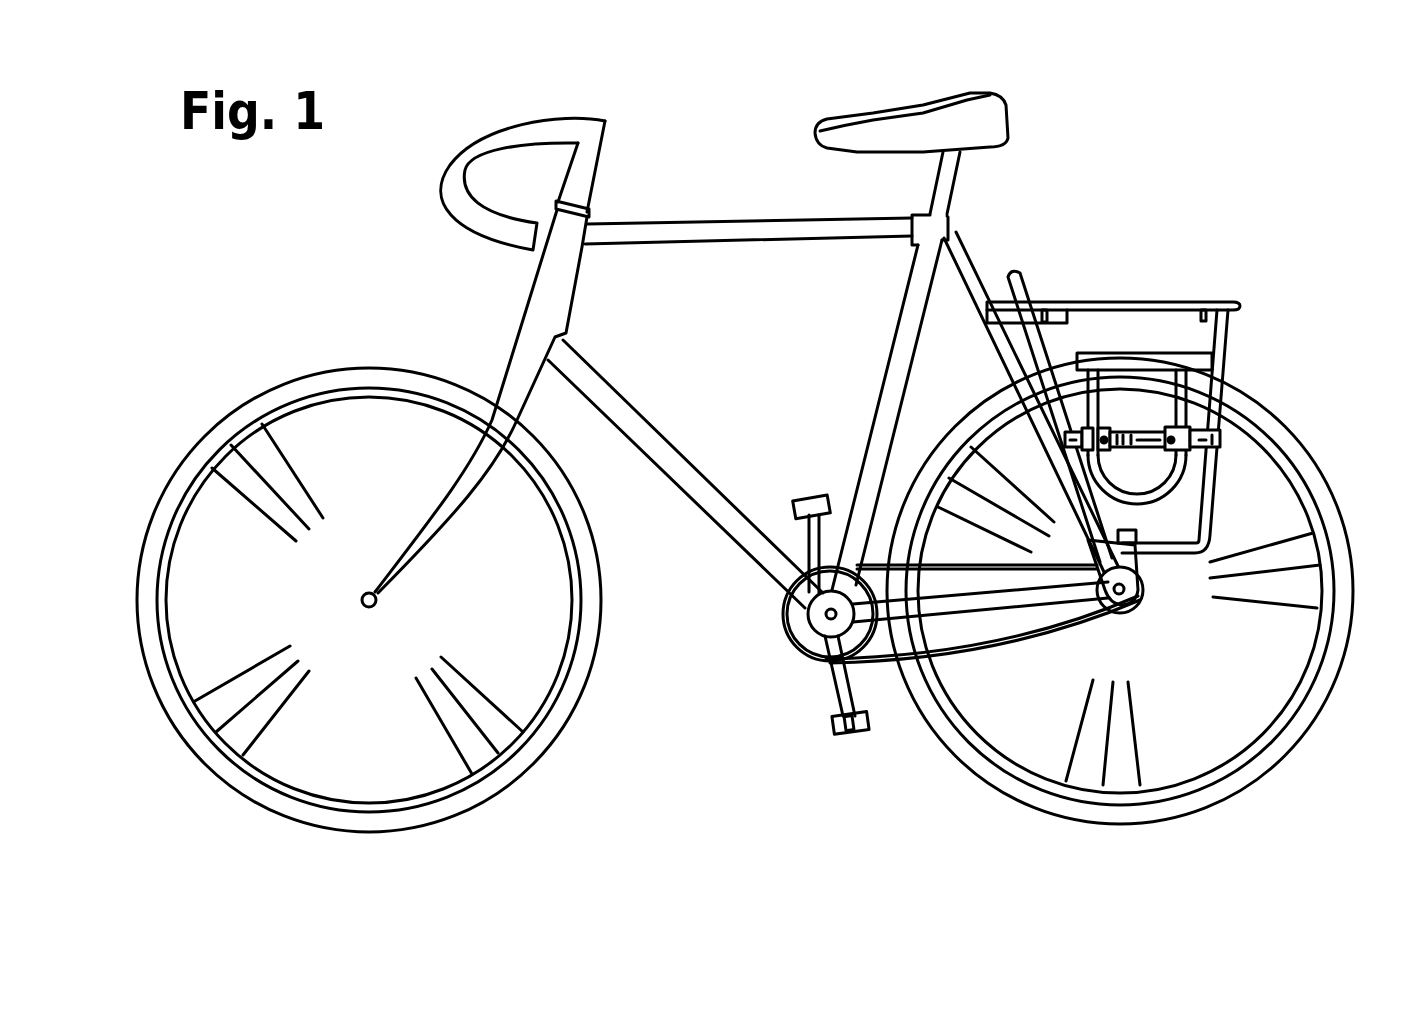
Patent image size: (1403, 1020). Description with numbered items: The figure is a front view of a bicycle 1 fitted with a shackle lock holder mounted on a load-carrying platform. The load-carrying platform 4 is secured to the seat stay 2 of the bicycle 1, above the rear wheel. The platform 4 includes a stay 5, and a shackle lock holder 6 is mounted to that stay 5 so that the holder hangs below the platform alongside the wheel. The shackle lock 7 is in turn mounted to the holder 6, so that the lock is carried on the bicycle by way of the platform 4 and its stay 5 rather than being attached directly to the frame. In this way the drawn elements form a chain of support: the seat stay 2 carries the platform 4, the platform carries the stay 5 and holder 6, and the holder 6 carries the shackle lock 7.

The bicycle 1 is at (745, 462).
The seat stay 2 is at (985, 340).
The load-carrying platform 4 is at (1156, 300).
The stay 5 is at (1213, 394).
The shackle lock holder 6 is at (1222, 443).
The shackle lock 7 is at (1205, 351).